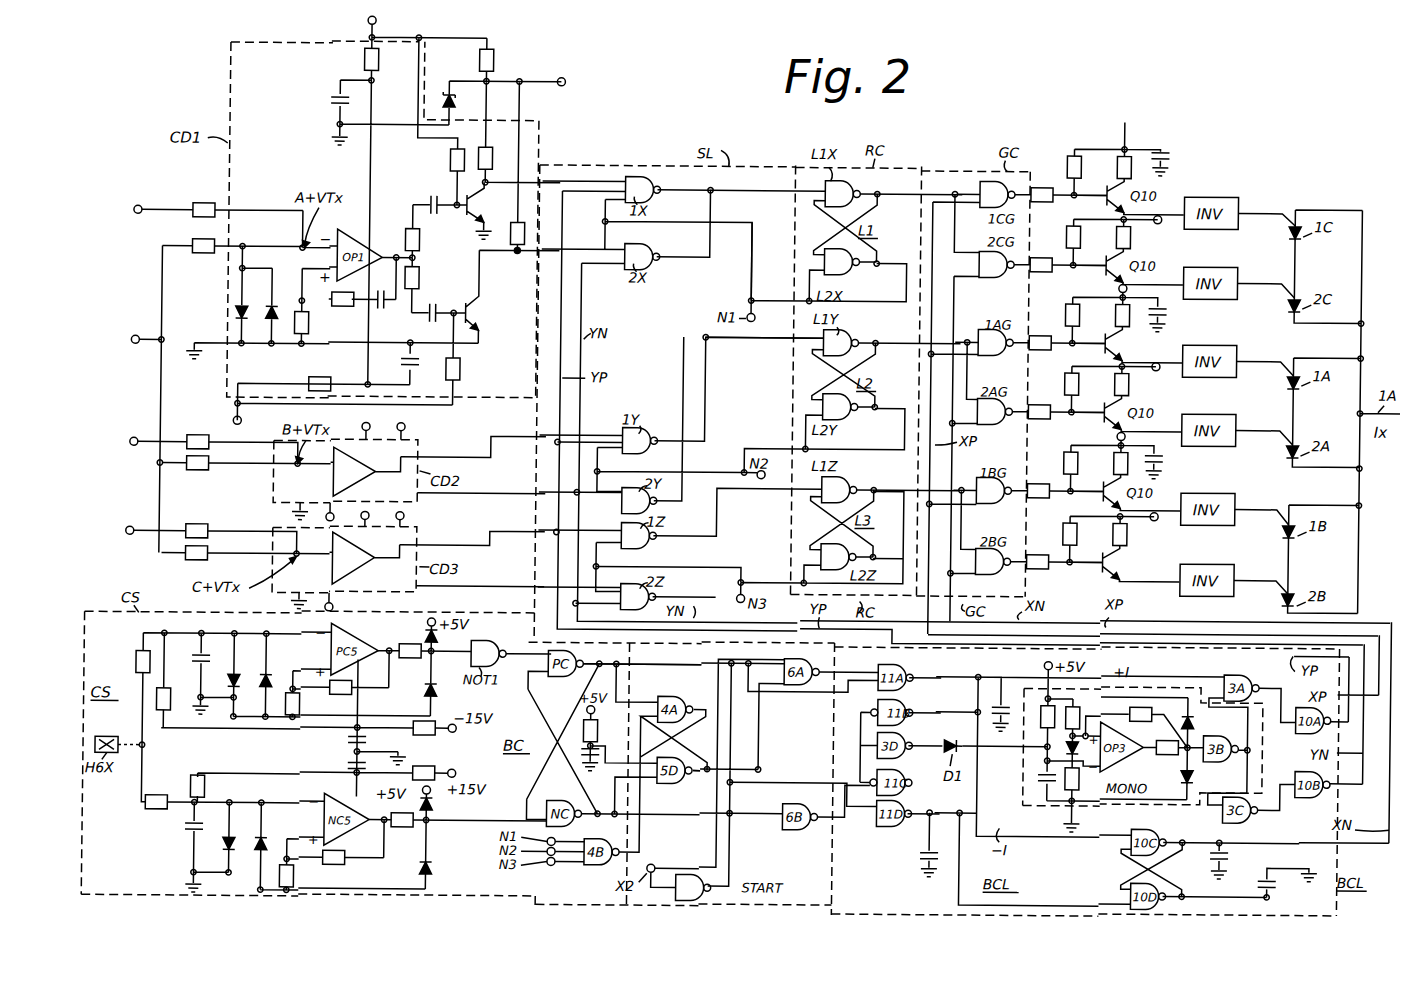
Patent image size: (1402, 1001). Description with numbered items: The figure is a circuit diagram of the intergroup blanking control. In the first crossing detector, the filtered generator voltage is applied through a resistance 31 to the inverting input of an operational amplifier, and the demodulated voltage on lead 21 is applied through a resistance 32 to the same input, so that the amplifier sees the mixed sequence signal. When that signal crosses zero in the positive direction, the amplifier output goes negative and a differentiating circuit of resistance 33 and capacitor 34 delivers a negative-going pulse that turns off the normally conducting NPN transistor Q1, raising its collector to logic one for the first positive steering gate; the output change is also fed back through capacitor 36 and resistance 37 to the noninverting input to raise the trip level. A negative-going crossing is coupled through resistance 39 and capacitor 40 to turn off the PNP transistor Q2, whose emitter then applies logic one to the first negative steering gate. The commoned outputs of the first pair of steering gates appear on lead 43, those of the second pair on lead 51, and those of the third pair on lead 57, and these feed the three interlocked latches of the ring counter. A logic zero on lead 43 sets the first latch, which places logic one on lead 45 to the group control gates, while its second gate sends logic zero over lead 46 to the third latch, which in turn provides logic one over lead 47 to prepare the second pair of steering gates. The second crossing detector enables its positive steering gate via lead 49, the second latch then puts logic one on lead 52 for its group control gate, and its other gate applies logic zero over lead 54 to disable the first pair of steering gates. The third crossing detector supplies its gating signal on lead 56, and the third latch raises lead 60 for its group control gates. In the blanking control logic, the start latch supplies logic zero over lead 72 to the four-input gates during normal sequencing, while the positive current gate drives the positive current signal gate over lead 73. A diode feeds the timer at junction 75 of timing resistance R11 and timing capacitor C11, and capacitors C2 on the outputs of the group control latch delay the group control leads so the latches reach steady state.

The lead 21 is at (162, 299).
The resistance 31 is at (210, 202).
The resistance 32 is at (207, 254).
The resistance 33 is at (420, 236).
The capacitor 34 is at (430, 202).
The capacitor 36 is at (384, 309).
The resistance 37 is at (343, 308).
The resistance 39 is at (421, 279).
The capacitor 40 is at (440, 313).
The lead 43 is at (762, 195).
The lead 45 is at (929, 194).
The lead 46 is at (898, 286).
The lead 47 is at (725, 470).
The lead 49 is at (459, 458).
The lead 51 is at (778, 340).
The lead 52 is at (950, 343).
The lead 54 is at (751, 268).
The lead 56 is at (459, 547).
The lead 57 is at (738, 490).
The lead 60 is at (955, 490).
The lead 72 is at (708, 777).
The lead 73 is at (681, 668).
The junction 75 is at (1040, 748).
The NPN transistor Q1 is at (479, 206).
The PNP transistor Q2 is at (480, 314).
The timing resistance R11 is at (1040, 710).
The timing capacitor C11 is at (1040, 782).
The capacitors C2 is at (1227, 856).